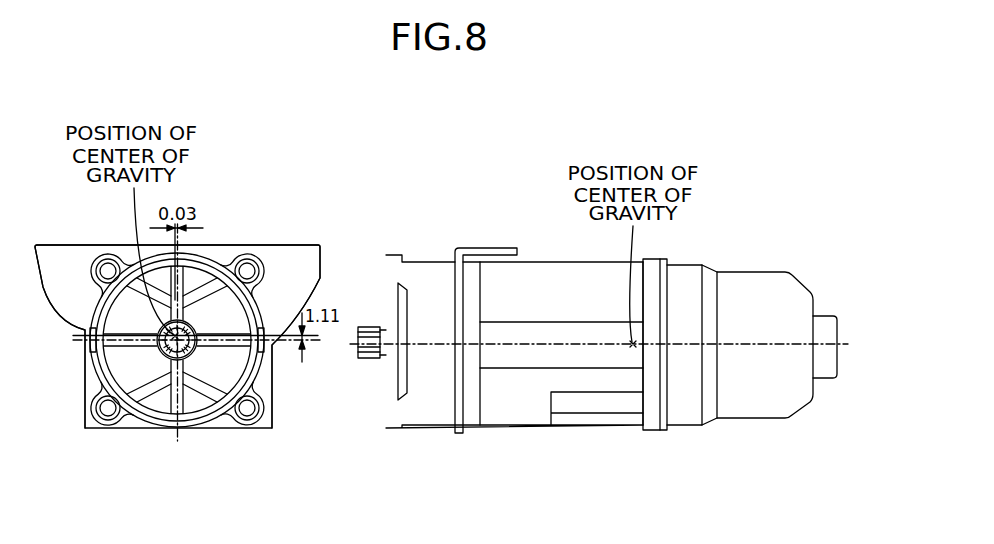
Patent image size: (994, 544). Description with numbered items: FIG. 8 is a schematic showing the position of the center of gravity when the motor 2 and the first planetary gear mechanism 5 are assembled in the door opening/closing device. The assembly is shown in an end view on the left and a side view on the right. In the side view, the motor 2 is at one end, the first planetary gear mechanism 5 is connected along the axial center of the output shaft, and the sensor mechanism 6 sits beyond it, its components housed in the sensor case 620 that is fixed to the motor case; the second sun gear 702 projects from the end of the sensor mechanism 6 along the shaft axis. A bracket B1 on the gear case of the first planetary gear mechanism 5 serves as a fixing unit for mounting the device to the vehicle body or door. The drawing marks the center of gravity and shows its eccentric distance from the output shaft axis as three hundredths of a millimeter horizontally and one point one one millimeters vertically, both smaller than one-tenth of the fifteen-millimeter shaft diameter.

The motor 2 is at (793, 279).
The first planetary gear mechanism 5 is at (562, 262).
The sensor mechanism 6 is at (428, 262).
The sensor case 620 is at (205, 430).
The second sun gear 702 is at (166, 356).
The bracket B1 is at (88, 246).